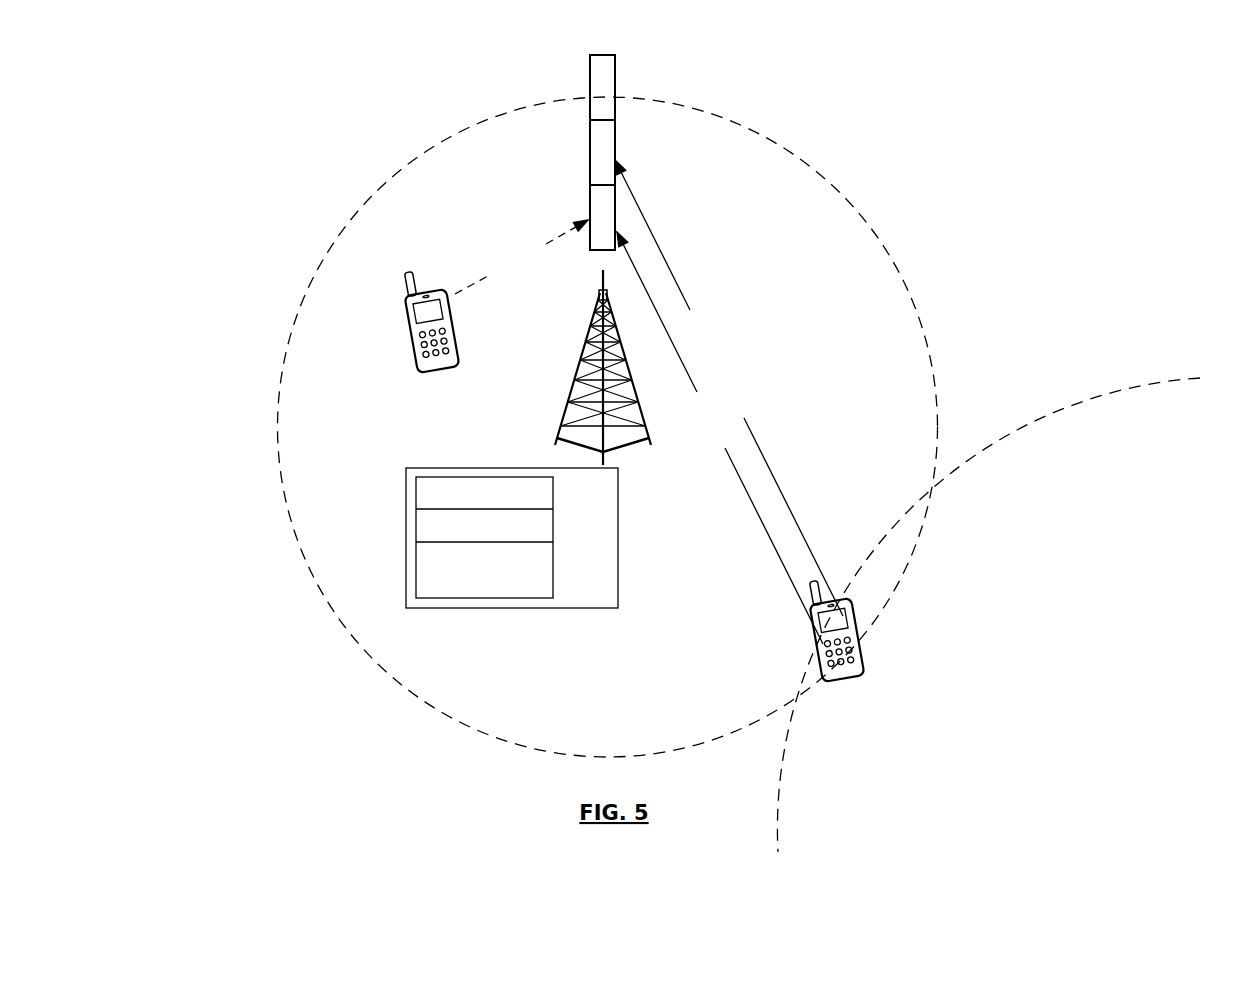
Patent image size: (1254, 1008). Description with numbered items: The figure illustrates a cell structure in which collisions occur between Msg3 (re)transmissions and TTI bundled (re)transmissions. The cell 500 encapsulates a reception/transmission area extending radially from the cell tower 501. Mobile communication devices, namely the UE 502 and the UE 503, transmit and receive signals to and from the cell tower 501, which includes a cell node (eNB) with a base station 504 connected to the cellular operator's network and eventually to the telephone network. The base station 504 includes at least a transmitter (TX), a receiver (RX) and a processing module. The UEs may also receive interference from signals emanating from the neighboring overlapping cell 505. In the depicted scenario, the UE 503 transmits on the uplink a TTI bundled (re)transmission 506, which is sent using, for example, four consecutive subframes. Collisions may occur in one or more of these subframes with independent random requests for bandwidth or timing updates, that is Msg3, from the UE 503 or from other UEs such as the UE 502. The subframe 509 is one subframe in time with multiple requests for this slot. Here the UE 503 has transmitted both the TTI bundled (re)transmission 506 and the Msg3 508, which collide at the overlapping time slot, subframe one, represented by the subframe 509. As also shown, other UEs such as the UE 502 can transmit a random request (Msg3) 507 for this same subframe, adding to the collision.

The cell 500 is at (283, 485).
The cell tower 501 is at (560, 435).
The mobile communication device (UE) 502 is at (408, 298).
The mobile communication device (UE) 503 is at (812, 606).
The base station 504 is at (512, 538).
The neighboring overlapping cell 505 is at (1110, 392).
The TTI bundled (re)transmission 506 is at (747, 420).
The random request (Msg3) 507 is at (470, 282).
The Msg3 508 is at (733, 465).
The subframe 509 is at (617, 93).